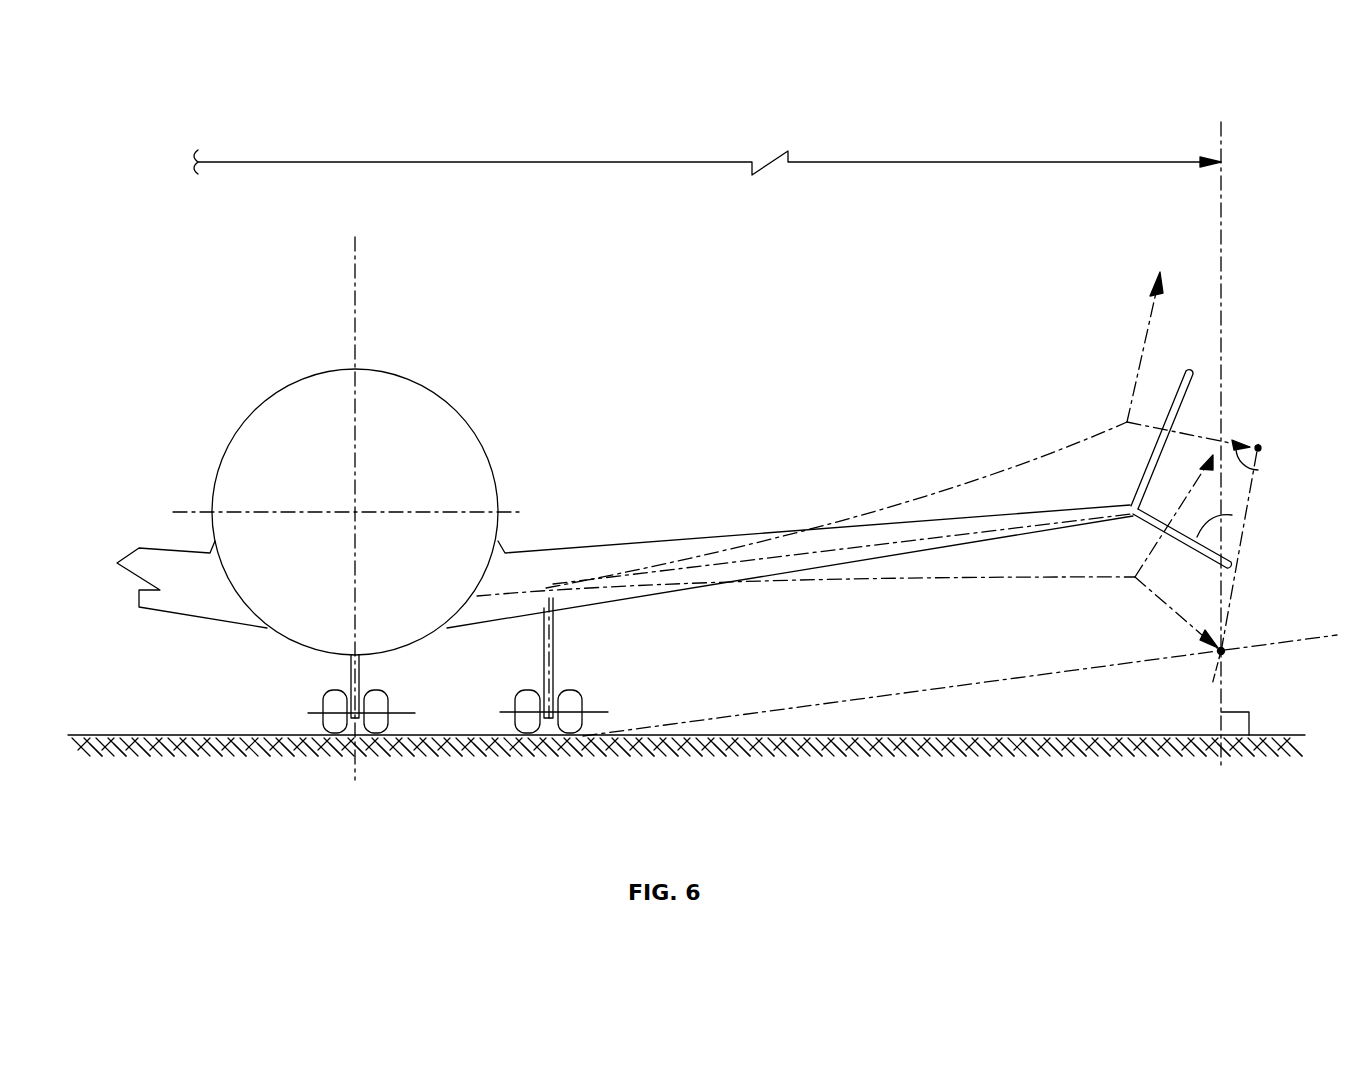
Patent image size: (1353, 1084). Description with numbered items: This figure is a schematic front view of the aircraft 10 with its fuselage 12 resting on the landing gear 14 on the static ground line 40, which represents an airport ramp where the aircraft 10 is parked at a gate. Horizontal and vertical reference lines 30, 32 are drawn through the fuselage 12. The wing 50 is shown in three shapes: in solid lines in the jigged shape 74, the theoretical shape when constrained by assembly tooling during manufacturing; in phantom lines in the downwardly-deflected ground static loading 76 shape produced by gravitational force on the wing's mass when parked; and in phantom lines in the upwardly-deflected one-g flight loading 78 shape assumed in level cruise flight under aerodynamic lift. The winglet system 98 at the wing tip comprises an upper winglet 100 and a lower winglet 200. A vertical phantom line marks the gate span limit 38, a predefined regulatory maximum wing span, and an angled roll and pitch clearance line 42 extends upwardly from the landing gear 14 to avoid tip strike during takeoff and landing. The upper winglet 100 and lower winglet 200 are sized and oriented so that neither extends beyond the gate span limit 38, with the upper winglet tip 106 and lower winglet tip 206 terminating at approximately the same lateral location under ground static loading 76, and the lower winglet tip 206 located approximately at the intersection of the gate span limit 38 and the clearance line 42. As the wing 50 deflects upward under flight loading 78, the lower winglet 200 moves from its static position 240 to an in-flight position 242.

The aircraft 10 is at (355, 500).
The fuselage 12 is at (278, 395).
The landing gear 14 is at (553, 643).
The longitudinal axis 30 is at (186, 512).
The vertical axis 32 is at (355, 300).
The gate span limit 38 is at (977, 162).
The static ground line 40 is at (974, 744).
The roll and pitch clearance line 42 is at (905, 692).
The wing 50 is at (596, 547).
The jigged shape 74 is at (840, 550).
The ground static loading shape 76 is at (941, 580).
The 1-g flight loading shape 78 is at (948, 489).
The winglet system 98 is at (1215, 422).
The upper winglet 100 is at (1188, 382).
The upper winglet tip 106 is at (1163, 276).
The lower winglet 200 is at (1232, 518).
The lower winglet tip 206 is at (1258, 468).
The static position 240 is at (1223, 655).
The in-flight position 242 is at (1263, 447).